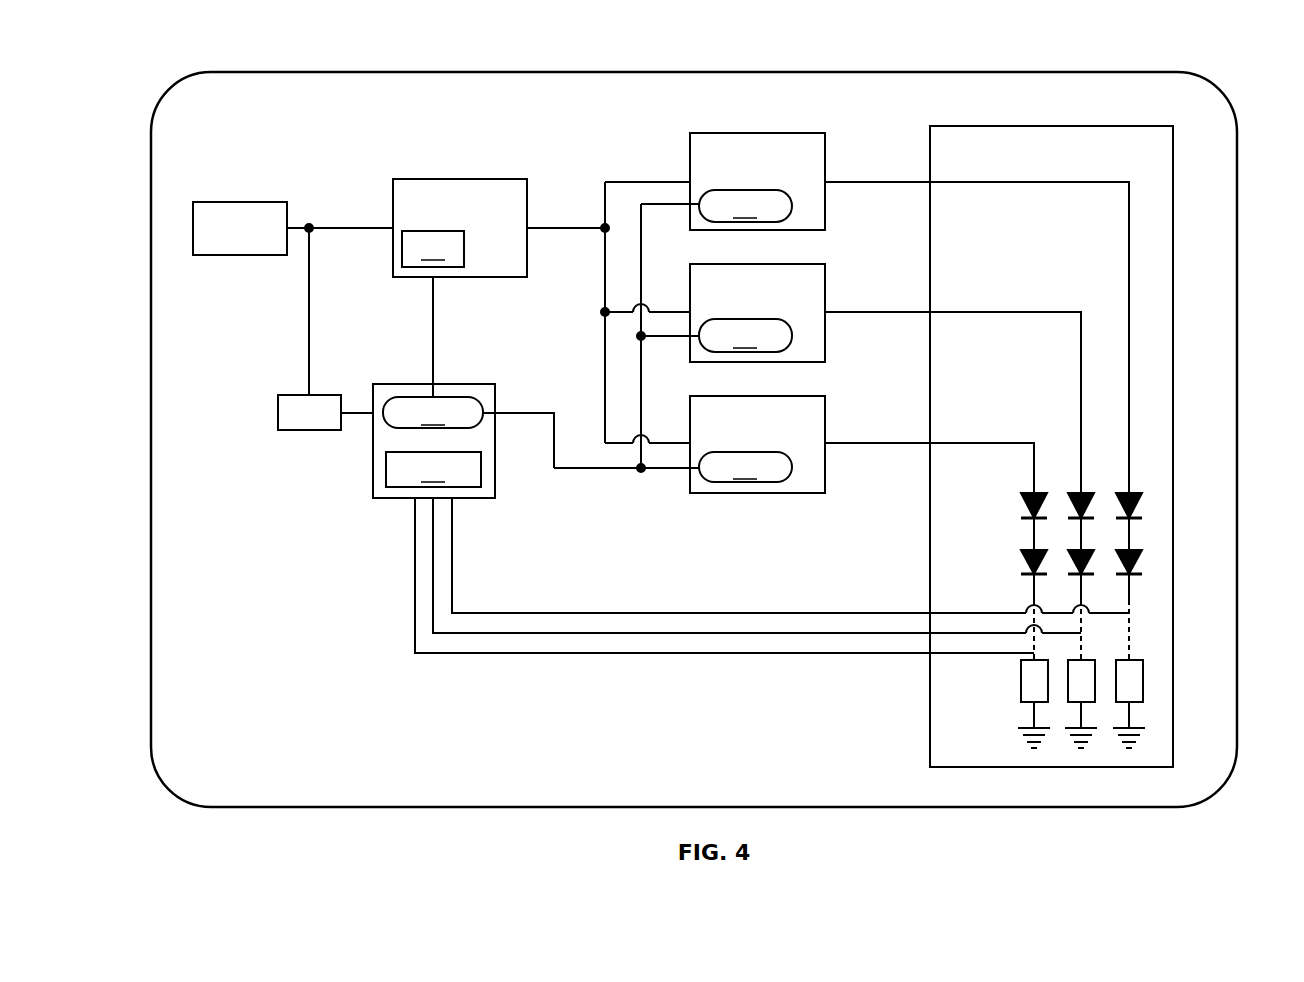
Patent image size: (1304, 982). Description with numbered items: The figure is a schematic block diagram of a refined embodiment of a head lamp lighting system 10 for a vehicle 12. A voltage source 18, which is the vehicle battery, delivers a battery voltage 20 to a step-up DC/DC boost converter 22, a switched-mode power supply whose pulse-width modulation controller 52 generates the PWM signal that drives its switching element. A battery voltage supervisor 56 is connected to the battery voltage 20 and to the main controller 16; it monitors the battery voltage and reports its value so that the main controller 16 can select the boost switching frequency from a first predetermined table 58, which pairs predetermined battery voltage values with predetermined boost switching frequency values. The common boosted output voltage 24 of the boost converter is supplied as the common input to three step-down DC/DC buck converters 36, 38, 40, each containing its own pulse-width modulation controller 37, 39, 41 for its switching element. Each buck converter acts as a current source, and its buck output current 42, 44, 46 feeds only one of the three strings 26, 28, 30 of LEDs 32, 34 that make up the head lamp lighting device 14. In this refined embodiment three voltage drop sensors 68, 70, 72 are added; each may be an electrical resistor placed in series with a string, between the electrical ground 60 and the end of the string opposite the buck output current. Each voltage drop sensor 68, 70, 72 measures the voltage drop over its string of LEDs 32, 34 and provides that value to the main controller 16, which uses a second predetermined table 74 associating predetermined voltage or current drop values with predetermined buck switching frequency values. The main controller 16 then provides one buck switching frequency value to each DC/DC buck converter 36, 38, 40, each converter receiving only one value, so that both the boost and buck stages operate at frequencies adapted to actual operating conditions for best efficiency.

The head lamp lighting system 10 is at (613, 99).
The vehicle 12 is at (874, 56).
The head lamp lighting device 14 is at (1166, 117).
The main controller 16 is at (394, 506).
The voltage source 18 is at (231, 192).
The battery voltage 20 is at (321, 225).
The DC/DC boost converter 22 is at (431, 171).
The common boosted output voltage 24 is at (558, 226).
The string of LEDs 26 is at (1098, 482).
The string of LEDs 28 is at (1148, 482).
The string of LEDs 30 is at (1014, 487).
The Light-Emitting Diode 32 is at (1135, 505).
The Light-Emitting Diode 34 is at (1028, 562).
The DC/DC buck converter 36 is at (813, 127).
The pulse-width modulation controller 37 is at (745, 206).
The DC/DC buck converter 38 is at (813, 261).
The pulse-width modulation controller 39 is at (745, 335).
The DC/DC buck converter 40 is at (813, 391).
The pulse-width modulation controller 41 is at (745, 467).
The buck output current 42 is at (891, 182).
The buck output current 44 is at (891, 312).
The buck output current 46 is at (891, 443).
The pulse-width modulation controller 52 is at (433, 314).
The battery voltage supervisor 56 is at (278, 442).
The first predetermined table 58 is at (468, 432).
The electrical ground 60 is at (1131, 716).
The voltage drop sensor 68 is at (1014, 705).
The voltage drop sensor 70 is at (1098, 652).
The voltage drop sensor 72 is at (1148, 655).
The second predetermined table 74 is at (433, 469).